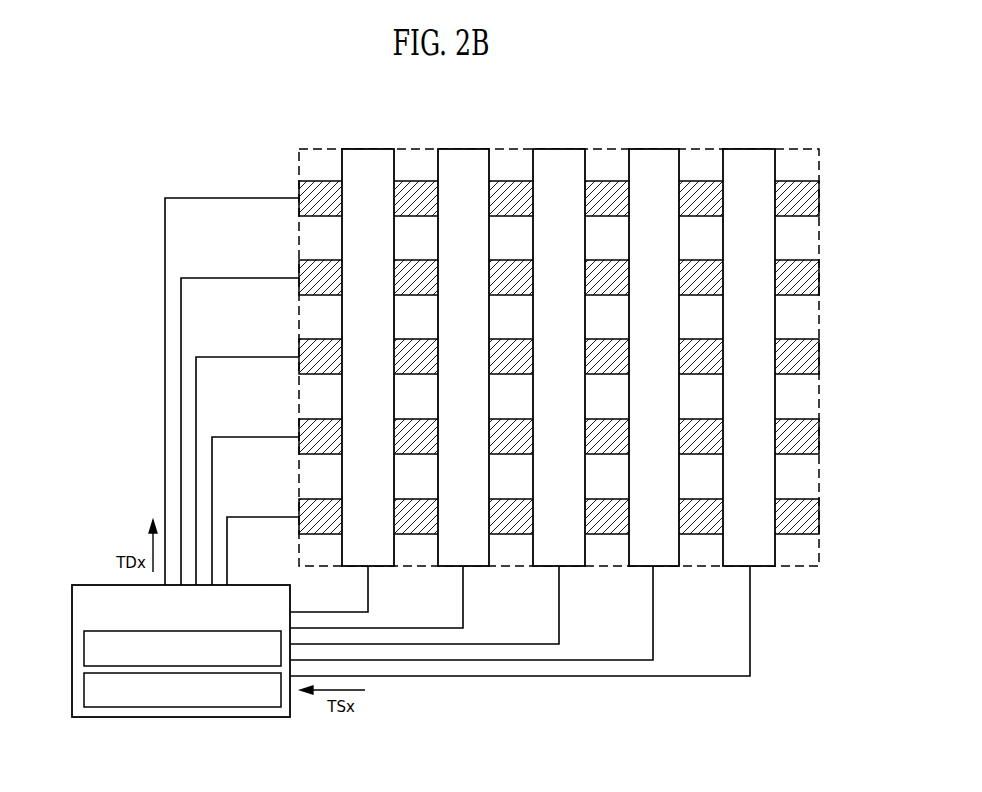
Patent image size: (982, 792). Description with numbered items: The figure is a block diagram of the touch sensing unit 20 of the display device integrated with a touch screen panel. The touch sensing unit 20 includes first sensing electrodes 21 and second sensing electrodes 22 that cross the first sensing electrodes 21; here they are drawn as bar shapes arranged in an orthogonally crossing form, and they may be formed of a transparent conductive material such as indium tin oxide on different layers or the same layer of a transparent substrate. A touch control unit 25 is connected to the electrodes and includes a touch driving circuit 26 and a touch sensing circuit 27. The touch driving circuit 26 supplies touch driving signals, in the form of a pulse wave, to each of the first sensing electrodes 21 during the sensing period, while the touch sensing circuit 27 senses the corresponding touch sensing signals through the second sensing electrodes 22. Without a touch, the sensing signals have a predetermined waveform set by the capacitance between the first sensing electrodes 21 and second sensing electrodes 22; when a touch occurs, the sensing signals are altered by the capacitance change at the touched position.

The touch sensing unit 20 is at (790, 149).
The first sensing electrodes 21 is at (297, 189).
The second sensing electrodes 22 is at (369, 149).
The touch control unit 25 is at (159, 677).
The touch driving circuit 26 is at (84, 644).
The touch sensing circuit 27 is at (84, 689).